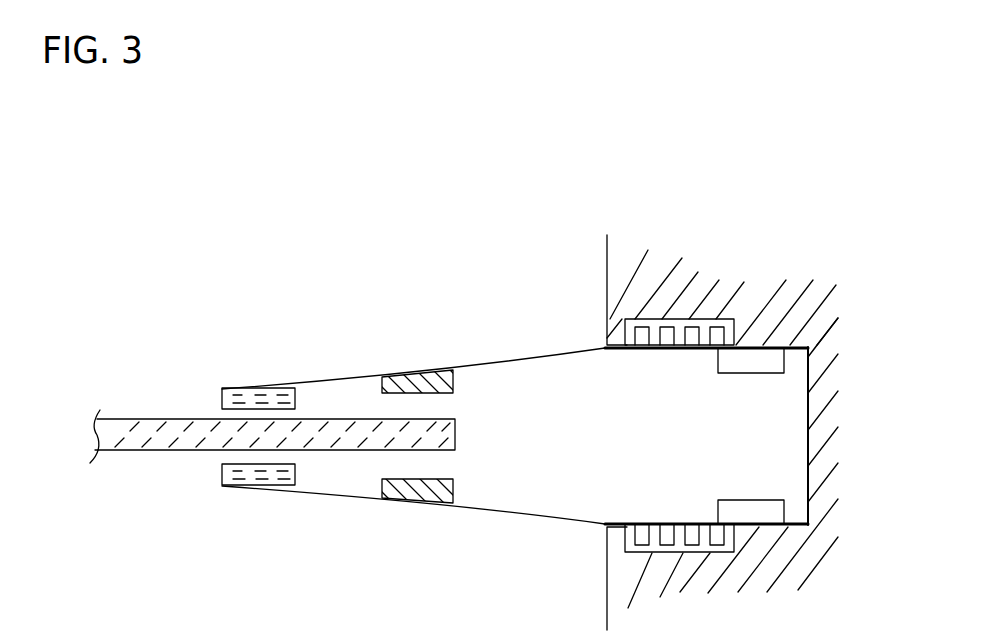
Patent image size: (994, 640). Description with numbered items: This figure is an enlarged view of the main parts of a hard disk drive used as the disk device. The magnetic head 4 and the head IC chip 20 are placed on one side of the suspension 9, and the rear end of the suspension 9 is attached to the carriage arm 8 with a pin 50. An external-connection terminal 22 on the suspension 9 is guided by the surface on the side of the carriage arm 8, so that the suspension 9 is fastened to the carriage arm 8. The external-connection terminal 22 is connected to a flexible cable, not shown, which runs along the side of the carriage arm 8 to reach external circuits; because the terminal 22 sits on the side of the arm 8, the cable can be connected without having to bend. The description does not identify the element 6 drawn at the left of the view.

The magnetic head 4 is at (247, 397).
The rod 6 is at (135, 427).
The carriage arm 8 is at (628, 293).
The suspension 9 is at (505, 360).
The head IC chip 20 is at (413, 377).
The external-connection terminal 22 is at (656, 328).
The pin 50 is at (740, 364).